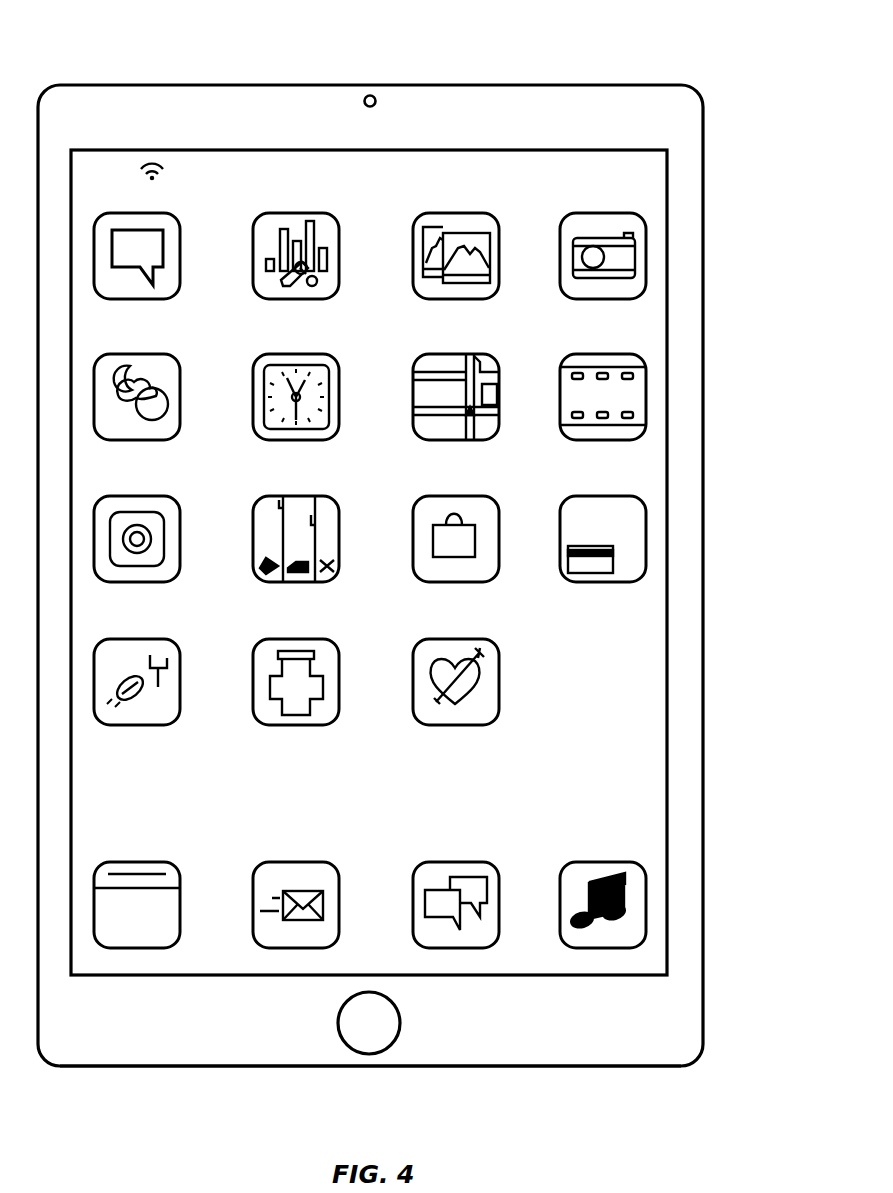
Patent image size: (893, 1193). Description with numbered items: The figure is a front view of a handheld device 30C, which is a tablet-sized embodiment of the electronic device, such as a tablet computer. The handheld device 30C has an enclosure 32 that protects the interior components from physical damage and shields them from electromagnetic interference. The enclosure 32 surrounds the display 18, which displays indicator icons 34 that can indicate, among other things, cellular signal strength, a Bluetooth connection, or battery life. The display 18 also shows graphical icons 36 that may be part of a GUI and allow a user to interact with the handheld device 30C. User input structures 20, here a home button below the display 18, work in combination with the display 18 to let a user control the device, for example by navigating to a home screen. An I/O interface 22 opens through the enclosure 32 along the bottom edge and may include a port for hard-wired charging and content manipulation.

The handheld device 30C is at (78, 67).
The enclosure 32 is at (623, 85).
The indicator icons 34 is at (152, 163).
The graphical icons 36 is at (646, 540).
The display 18 is at (669, 643).
The user input structures 20 is at (400, 1024).
The I/O interface 22 is at (372, 1067).